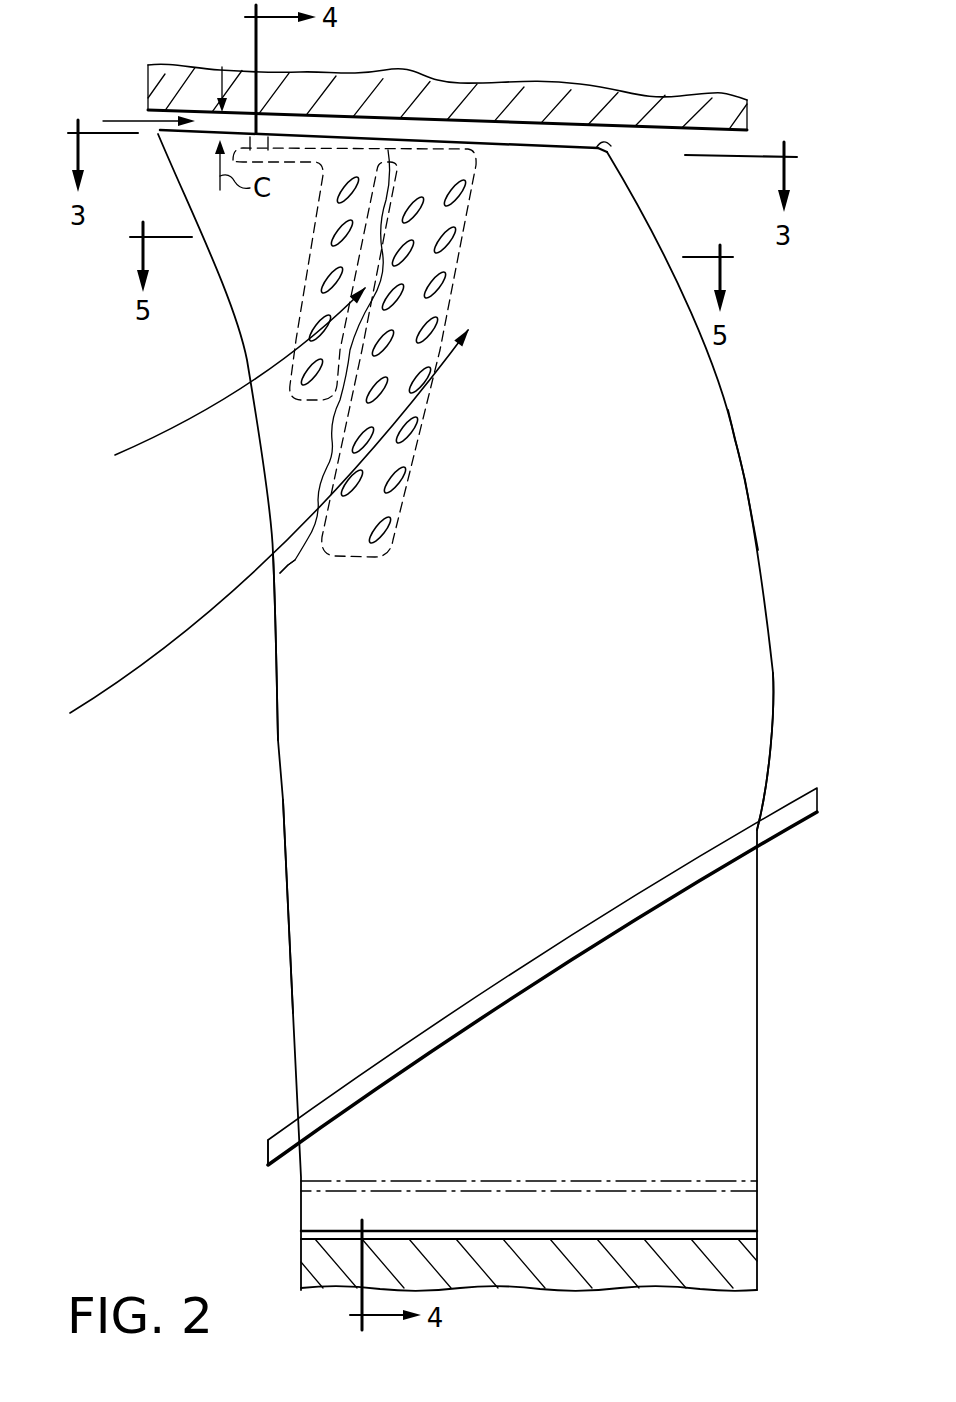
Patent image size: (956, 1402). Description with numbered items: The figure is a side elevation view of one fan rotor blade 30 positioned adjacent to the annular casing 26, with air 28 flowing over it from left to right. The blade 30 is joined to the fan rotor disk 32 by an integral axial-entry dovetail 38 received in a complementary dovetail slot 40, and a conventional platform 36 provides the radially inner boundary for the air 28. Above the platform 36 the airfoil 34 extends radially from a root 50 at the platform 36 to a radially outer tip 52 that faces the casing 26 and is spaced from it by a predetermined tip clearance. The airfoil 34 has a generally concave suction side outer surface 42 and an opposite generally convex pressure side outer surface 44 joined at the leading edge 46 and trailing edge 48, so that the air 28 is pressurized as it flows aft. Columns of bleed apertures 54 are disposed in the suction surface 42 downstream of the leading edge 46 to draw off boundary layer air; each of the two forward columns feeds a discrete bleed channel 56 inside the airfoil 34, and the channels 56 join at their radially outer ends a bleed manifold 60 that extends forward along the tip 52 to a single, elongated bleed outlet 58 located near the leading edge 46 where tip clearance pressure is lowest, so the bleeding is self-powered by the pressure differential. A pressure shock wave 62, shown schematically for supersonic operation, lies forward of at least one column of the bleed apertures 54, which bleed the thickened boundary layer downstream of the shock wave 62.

The casing 26 is at (596, 78).
The air 28 is at (100, 700).
The rotor blade 30 is at (270, 858).
The fan rotor disk 32 is at (760, 1265).
The airfoil 34 is at (292, 1013).
The platform 36 is at (266, 1136).
The axial-entry dovetail 38 is at (300, 1181).
The dovetail slot 40 is at (300, 1232).
The suction side outer surface 42 is at (725, 540).
The pressure side outer surface 44 is at (693, 509).
The leading edge 46 is at (276, 657).
The trailing edge 48 is at (772, 733).
The root 50 is at (530, 954).
The tip 52 is at (611, 146).
The bleed apertures 54 is at (345, 238).
The bleed channel 56 is at (300, 331).
The bleed outlet 58 is at (250, 135).
The bleed manifold 60 is at (387, 148).
The shock wave 62 is at (288, 557).